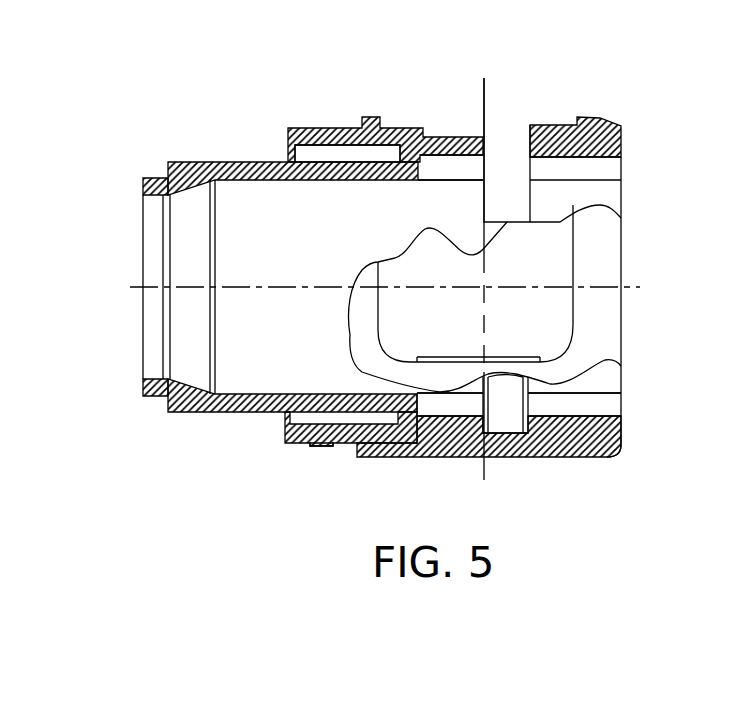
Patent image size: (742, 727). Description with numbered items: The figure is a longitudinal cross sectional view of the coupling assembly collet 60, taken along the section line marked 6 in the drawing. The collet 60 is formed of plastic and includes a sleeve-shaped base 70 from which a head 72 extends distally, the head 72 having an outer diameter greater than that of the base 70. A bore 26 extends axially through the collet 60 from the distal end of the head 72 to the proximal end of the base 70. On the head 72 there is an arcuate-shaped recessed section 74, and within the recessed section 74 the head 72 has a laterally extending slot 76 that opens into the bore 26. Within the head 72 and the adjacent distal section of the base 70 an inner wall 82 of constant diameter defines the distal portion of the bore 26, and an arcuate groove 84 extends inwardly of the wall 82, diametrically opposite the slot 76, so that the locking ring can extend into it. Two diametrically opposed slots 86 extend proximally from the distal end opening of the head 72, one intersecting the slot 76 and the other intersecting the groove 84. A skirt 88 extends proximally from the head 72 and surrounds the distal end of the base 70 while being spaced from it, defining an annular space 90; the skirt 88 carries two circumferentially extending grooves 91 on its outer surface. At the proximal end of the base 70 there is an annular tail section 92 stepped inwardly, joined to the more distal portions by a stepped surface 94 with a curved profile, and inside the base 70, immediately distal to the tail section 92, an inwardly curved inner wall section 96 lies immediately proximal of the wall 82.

The section line 6- 6 is at (485, 78).
The bore 26 is at (600, 243).
The collet 60 is at (541, 269).
The base 70 is at (243, 275).
The head 72 is at (573, 457).
The recessed section 74 is at (370, 103).
The slot 76 is at (510, 157).
The inner wall 82 is at (250, 392).
The arcuate groove 84 is at (510, 410).
The slots 86 is at (612, 168).
The skirt 88 is at (307, 465).
The annular space 90 is at (394, 125).
The grooves 91 is at (337, 445).
The tail section 92 is at (143, 389).
The stepped surface 94 is at (157, 179).
The inner wall section 96 is at (188, 197).